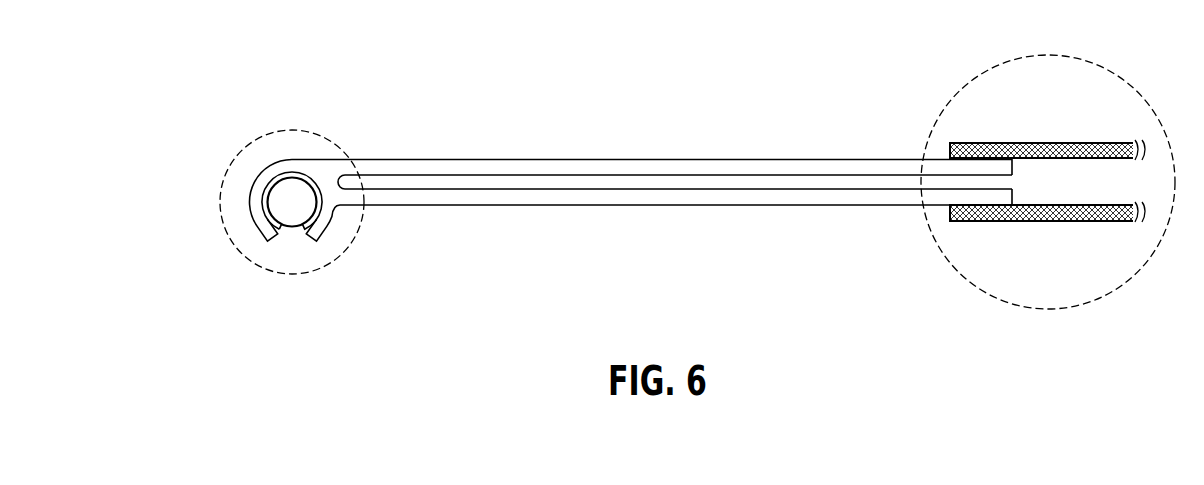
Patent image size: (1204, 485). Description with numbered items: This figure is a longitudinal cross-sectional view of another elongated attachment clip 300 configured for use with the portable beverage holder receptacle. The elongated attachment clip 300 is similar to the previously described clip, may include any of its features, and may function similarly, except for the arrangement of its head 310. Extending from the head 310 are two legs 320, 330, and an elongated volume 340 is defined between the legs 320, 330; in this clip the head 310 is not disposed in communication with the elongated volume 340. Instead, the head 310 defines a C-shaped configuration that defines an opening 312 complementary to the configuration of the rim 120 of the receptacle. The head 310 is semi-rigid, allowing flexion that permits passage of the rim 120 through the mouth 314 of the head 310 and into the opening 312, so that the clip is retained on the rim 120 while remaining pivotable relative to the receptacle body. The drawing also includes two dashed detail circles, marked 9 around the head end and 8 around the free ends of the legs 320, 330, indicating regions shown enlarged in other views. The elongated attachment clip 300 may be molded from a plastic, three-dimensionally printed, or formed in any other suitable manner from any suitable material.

The elongated attachment clip 300 is at (617, 220).
The head 310 is at (310, 170).
The opening 312 is at (268, 212).
The mouth 314 is at (295, 238).
The rim 120 is at (318, 213).
The leg 320 is at (495, 165).
The leg 330 is at (670, 198).
The elongated volume 340 is at (417, 183).
The detail view circle for FIG. 8 is at (953, 270).
The detail view circle for FIG. 9 is at (228, 168).